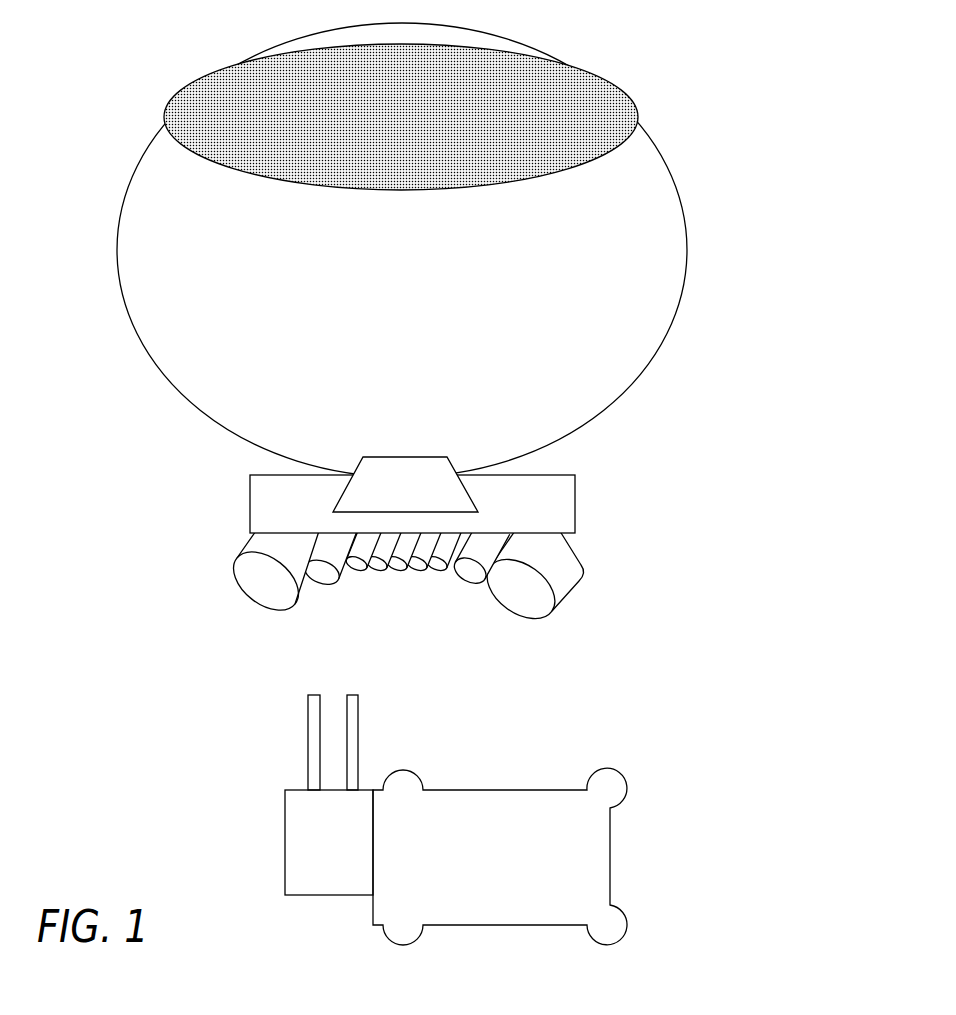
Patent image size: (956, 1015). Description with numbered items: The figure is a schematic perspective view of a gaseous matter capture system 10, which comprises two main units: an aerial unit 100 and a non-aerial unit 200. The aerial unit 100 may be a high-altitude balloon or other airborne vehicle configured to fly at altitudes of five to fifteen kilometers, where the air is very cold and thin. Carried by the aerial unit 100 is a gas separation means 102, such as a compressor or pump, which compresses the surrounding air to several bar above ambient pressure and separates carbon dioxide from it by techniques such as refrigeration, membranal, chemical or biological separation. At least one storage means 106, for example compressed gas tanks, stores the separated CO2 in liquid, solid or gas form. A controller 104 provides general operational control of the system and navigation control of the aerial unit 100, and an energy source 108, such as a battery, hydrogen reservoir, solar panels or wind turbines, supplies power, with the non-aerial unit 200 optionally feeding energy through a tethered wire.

The gaseous matter capture system 10 is at (751, 584).
The aerial unit 100 is at (168, 383).
The gas separation means 102 is at (468, 483).
The controller 104 is at (250, 505).
The storage means 106 is at (377, 606).
The energy source 108 is at (629, 69).
The non-aerial unit 200 is at (779, 797).